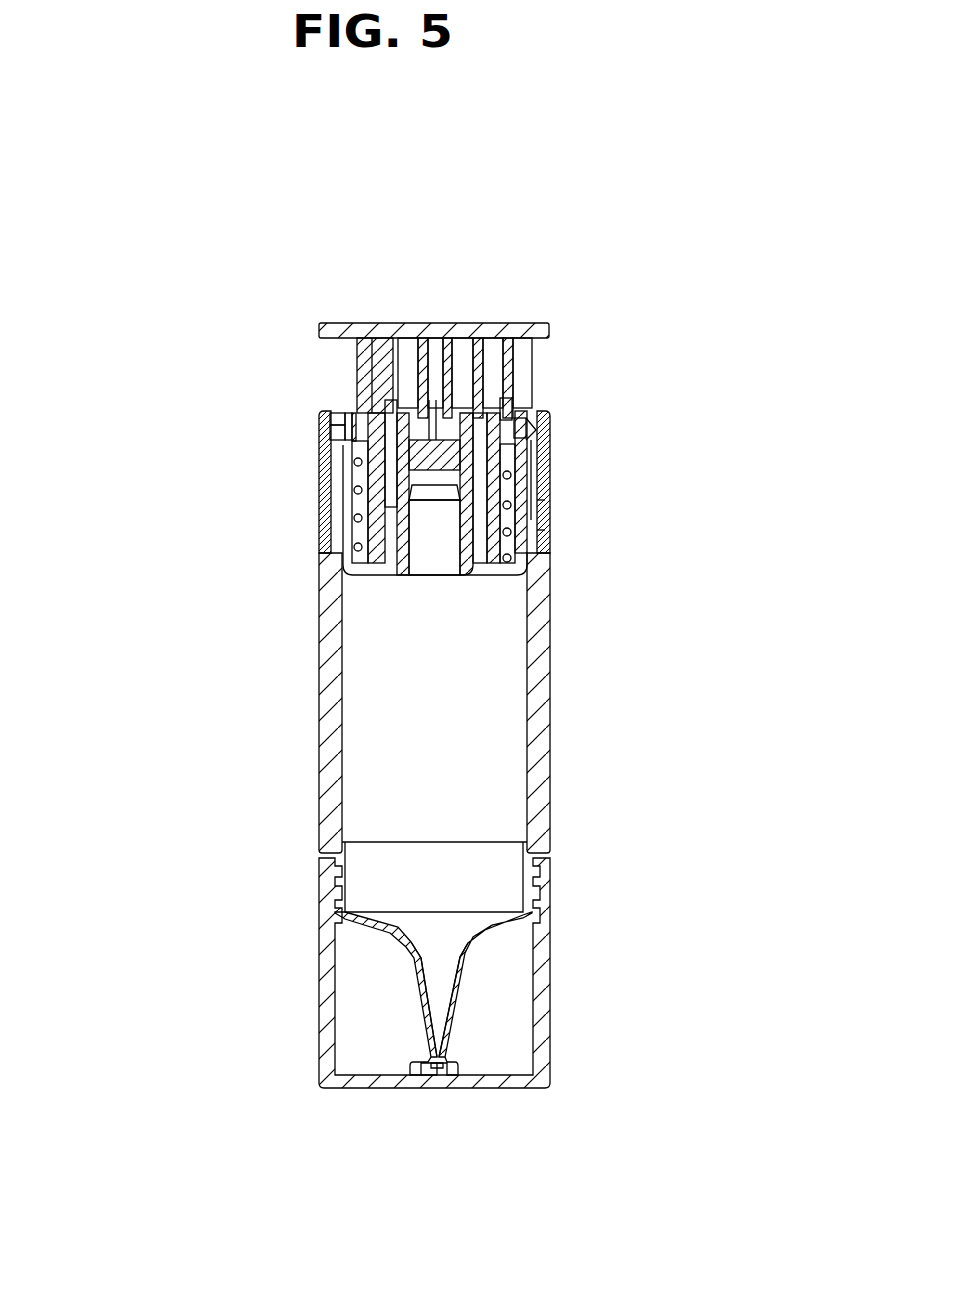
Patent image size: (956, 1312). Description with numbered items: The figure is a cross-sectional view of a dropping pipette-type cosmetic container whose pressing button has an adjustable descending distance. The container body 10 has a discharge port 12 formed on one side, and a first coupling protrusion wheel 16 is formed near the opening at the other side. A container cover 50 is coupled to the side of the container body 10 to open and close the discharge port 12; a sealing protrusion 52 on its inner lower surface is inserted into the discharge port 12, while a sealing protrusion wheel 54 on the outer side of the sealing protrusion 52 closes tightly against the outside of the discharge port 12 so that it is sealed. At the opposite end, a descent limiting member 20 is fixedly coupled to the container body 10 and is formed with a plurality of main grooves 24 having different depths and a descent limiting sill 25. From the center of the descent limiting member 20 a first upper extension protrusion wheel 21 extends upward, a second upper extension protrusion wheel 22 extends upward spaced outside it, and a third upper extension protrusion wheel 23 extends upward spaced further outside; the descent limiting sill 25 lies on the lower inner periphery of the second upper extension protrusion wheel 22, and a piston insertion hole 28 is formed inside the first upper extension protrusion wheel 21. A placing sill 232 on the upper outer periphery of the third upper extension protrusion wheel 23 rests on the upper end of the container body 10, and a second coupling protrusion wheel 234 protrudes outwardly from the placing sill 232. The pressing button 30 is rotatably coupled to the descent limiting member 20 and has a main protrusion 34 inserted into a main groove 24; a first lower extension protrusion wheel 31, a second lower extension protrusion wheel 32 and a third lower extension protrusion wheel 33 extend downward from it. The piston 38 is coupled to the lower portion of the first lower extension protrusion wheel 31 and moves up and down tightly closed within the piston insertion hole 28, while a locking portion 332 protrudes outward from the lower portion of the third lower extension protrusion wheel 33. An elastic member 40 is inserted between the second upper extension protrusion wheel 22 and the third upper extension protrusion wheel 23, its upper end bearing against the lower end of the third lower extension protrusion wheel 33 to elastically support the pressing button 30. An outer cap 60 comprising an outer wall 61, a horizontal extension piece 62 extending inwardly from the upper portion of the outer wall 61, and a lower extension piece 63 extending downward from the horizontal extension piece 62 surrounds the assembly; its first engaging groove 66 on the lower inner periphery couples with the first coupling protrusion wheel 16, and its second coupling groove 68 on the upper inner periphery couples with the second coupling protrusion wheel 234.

The container body 10 is at (300, 797).
The discharge port 12 is at (442, 1053).
The first coupling protrusion wheel 16 is at (543, 510).
The descent limiting member 20 is at (322, 537).
The first upper extension protrusion wheel 21 is at (463, 530).
The second upper extension protrusion wheel 22 is at (490, 530).
The third upper extension protrusion wheel 23 is at (518, 545).
The main groove 24 is at (362, 412).
The descent limiting sill 25 is at (500, 405).
The piston insertion hole 28 is at (427, 556).
The pressing button 30 is at (375, 306).
The first lower extension protrusion wheel 31 is at (465, 335).
The second lower extension protrusion wheel 32 is at (503, 335).
The third lower extension protrusion wheel 33 is at (536, 335).
The main protrusion 34 is at (385, 362).
The piston 38 is at (423, 525).
The elastic member 40 is at (352, 480).
The container cover 50 is at (300, 1033).
The sealing protrusion 52 is at (433, 1068).
The sealing protrusion wheel 54 is at (417, 1067).
The outer cap 60 is at (141, 346).
The outer wall 61 is at (327, 445).
The horizontal extension piece 62 is at (335, 420).
The lower extension piece 63 is at (340, 437).
The first engaging groove 66 is at (543, 525).
The second coupling groove 68 is at (542, 428).
The placing sill 232 is at (537, 462).
The second coupling protrusion wheel 234 is at (525, 437).
The locking portion 332 is at (383, 478).